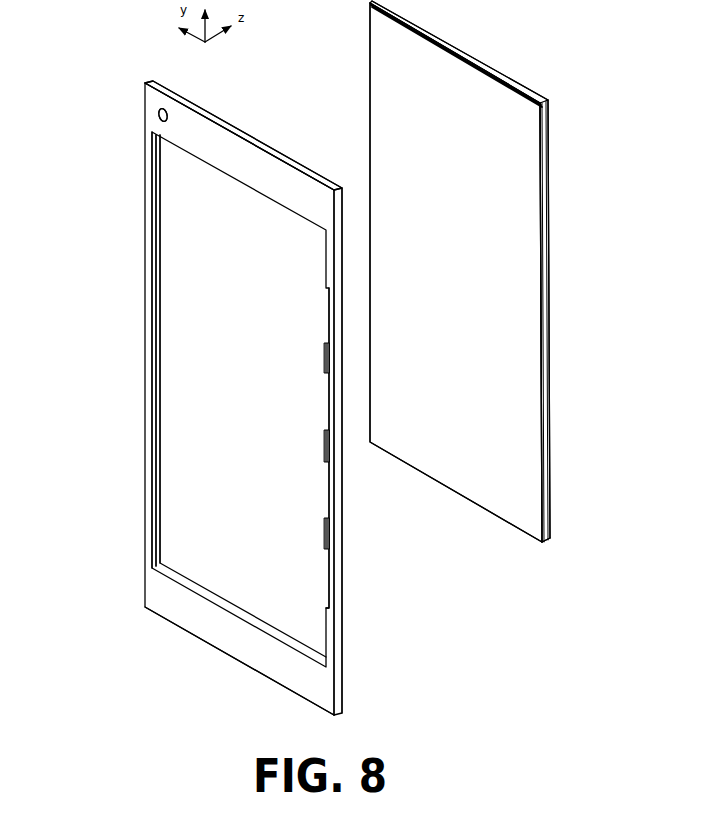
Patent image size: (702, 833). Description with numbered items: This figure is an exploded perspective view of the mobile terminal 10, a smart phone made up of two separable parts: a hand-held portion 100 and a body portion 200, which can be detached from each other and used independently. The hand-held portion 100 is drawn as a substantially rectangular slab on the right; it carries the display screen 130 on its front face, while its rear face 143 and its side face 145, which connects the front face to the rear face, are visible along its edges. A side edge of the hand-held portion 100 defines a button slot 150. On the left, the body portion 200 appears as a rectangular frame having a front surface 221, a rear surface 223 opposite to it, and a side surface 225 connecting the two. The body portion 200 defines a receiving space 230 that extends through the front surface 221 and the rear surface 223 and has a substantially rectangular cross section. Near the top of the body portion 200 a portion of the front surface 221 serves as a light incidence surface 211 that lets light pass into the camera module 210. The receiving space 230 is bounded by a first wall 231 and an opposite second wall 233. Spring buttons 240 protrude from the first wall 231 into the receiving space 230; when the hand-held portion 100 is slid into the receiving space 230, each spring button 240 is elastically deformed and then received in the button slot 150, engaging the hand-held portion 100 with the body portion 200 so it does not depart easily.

The mobile terminal 10 is at (143, 60).
The hand-held portion 100 is at (393, 52).
The display screen 130 is at (380, 105).
The side face 145 is at (520, 88).
The button slot 150 is at (547, 333).
The rear face 143 is at (552, 522).
The body portion 200 is at (162, 590).
The camera module 210 is at (159, 110).
The light incidence surface 211 is at (167, 123).
The rear surface 223 is at (268, 147).
The front surface 221 is at (331, 693).
The side surface 225 is at (338, 510).
The receiving space 230 is at (170, 212).
The second wall 233 is at (160, 518).
The first wall 231 is at (328, 624).
The spring button 240 is at (327, 533).